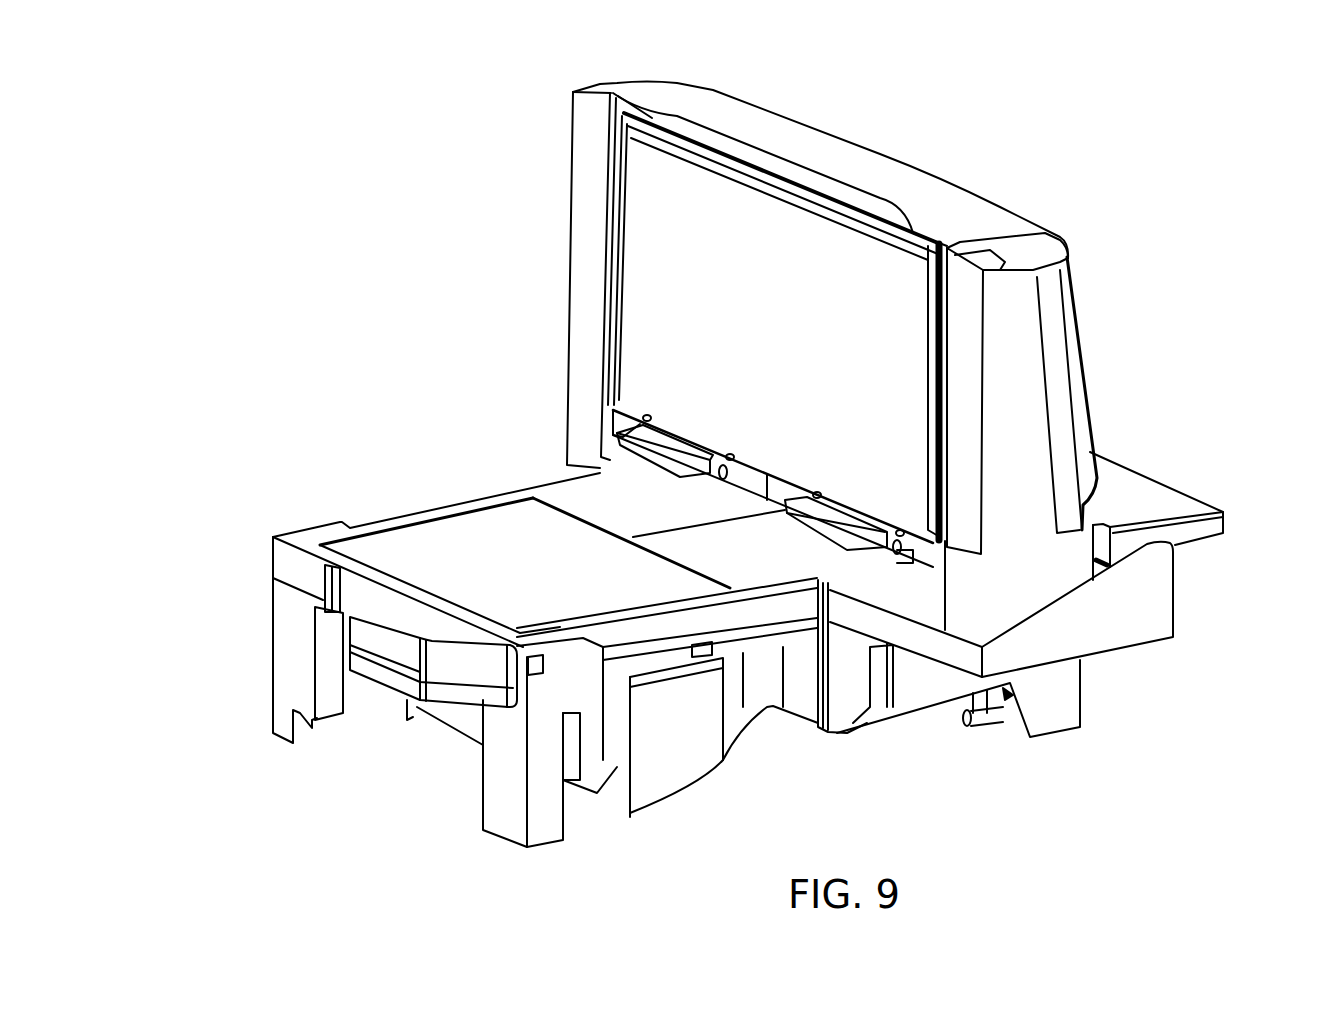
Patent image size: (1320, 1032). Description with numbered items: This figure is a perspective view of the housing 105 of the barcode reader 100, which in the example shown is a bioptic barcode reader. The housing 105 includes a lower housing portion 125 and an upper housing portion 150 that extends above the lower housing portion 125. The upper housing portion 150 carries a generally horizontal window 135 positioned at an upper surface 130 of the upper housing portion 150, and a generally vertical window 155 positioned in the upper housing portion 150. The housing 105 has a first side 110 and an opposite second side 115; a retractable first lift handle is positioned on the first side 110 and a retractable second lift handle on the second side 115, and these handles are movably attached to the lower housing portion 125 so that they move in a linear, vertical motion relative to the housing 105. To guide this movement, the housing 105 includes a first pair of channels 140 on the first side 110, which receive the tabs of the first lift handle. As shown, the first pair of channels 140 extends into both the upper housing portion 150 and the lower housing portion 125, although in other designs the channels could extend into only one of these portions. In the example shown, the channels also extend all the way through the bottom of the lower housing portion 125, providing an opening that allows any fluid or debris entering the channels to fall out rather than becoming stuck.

The barcode reader 100 is at (336, 156).
The housing 105 is at (565, 318).
The first side 110 is at (873, 722).
The second side 115 is at (306, 526).
The lower housing portion 125 is at (258, 576).
The upper surface 130 is at (578, 502).
The generally horizontal window 135 is at (440, 545).
The first pair of channels 140 is at (823, 745).
The upper housing portion 150 is at (748, 98).
The generally vertical window 155 is at (648, 228).